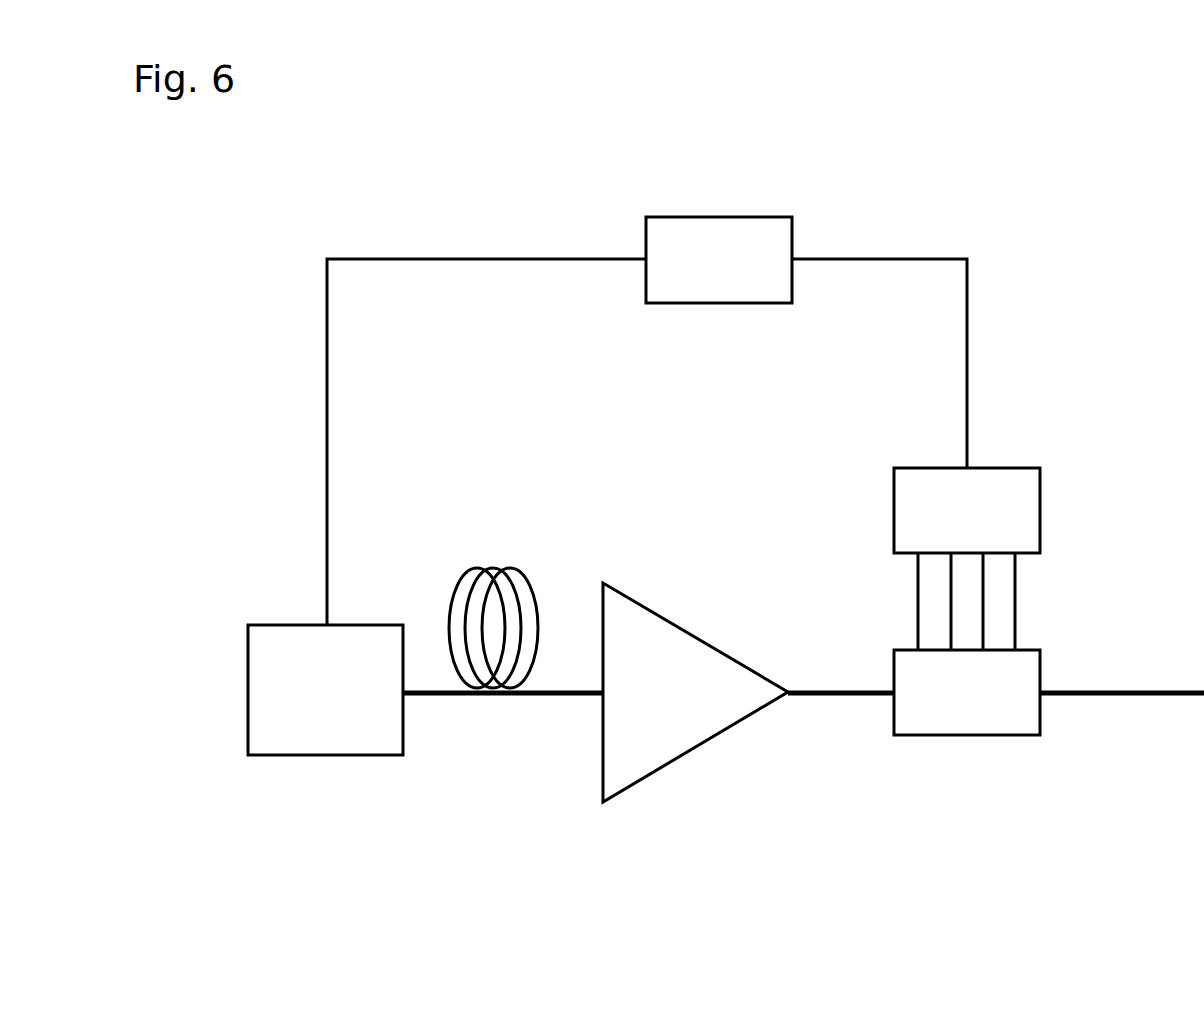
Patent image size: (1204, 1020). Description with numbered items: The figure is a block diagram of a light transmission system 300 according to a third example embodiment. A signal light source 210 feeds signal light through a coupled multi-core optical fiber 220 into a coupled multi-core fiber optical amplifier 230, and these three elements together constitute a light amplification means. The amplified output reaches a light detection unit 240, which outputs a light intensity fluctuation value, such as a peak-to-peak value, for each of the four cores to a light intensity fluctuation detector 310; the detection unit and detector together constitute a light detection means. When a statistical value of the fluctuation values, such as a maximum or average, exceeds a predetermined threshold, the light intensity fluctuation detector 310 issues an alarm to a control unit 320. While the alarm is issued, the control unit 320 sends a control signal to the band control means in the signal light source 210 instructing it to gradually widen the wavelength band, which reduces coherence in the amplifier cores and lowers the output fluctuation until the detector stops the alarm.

The light transmission system 300 is at (888, 149).
The signal light source 210 is at (366, 624).
The coupled multi-core optical fiber 220 is at (497, 568).
The coupled multi-core fiber optical amplifier 230 is at (663, 619).
The light detection unit 240 is at (960, 736).
The light intensity fluctuation detector 310 is at (1014, 468).
The control unit 320 is at (712, 217).